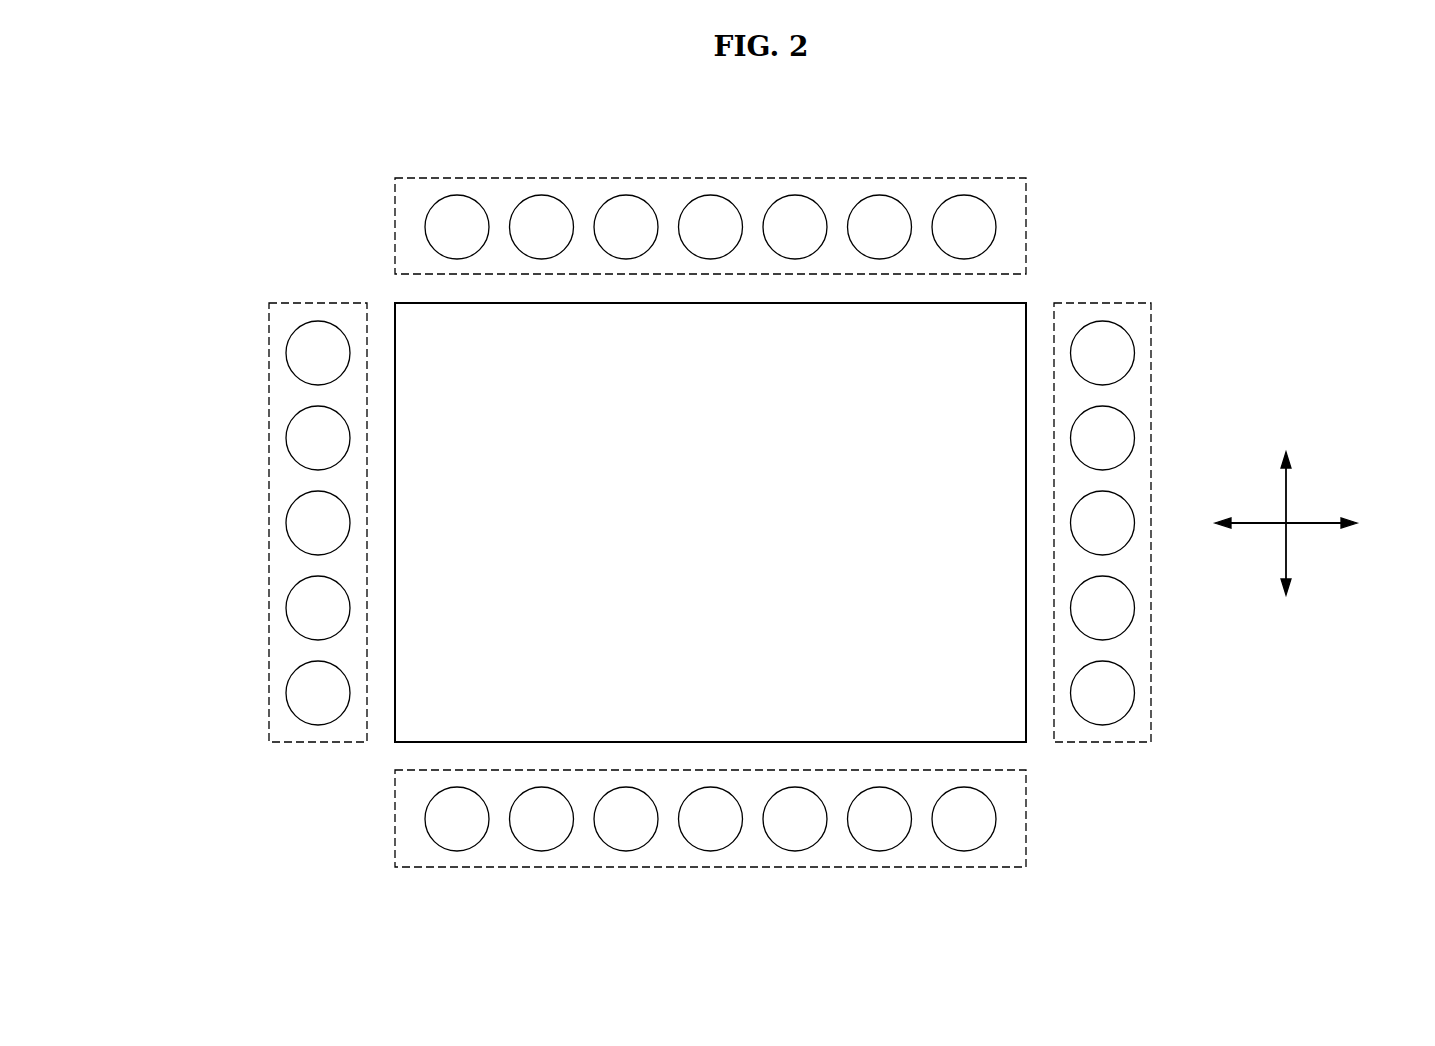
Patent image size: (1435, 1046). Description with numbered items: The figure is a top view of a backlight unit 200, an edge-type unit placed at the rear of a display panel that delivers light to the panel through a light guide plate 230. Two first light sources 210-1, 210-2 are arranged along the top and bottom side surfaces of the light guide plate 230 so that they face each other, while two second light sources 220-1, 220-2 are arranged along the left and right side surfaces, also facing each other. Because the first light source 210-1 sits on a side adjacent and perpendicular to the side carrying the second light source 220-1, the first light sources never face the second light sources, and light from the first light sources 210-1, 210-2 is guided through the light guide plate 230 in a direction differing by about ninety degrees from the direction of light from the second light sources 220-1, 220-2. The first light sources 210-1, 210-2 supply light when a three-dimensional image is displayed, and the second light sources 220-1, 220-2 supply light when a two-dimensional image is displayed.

The backlight unit 200 is at (732, 118).
The first light source 210-1 is at (710, 178).
The first light source 210-2 is at (1026, 818).
The second light source 220-1 is at (269, 370).
The second light source 220-2 is at (1151, 370).
The light guide plate 230 is at (1026, 303).